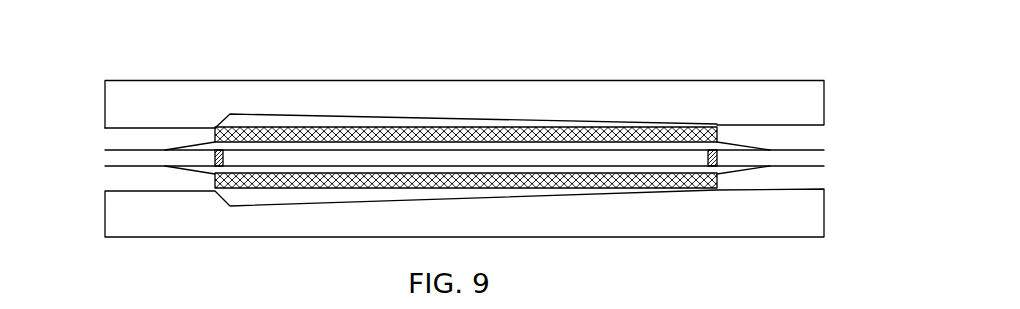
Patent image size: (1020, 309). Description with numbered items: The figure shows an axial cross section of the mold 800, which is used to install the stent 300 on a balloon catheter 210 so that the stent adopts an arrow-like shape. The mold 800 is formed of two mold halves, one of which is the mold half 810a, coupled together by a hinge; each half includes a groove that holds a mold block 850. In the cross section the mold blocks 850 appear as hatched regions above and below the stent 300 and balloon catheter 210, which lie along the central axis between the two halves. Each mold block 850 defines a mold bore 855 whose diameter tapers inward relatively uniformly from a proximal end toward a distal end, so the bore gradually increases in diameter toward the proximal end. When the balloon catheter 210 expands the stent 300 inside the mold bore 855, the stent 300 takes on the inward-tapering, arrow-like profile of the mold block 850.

The mold 800 is at (134, 57).
The mold half 810a is at (824, 80).
The mold block 850 is at (600, 112).
The mold bore 855 is at (398, 125).
The balloon catheter 210 is at (768, 149).
The stent 300 is at (215, 183).